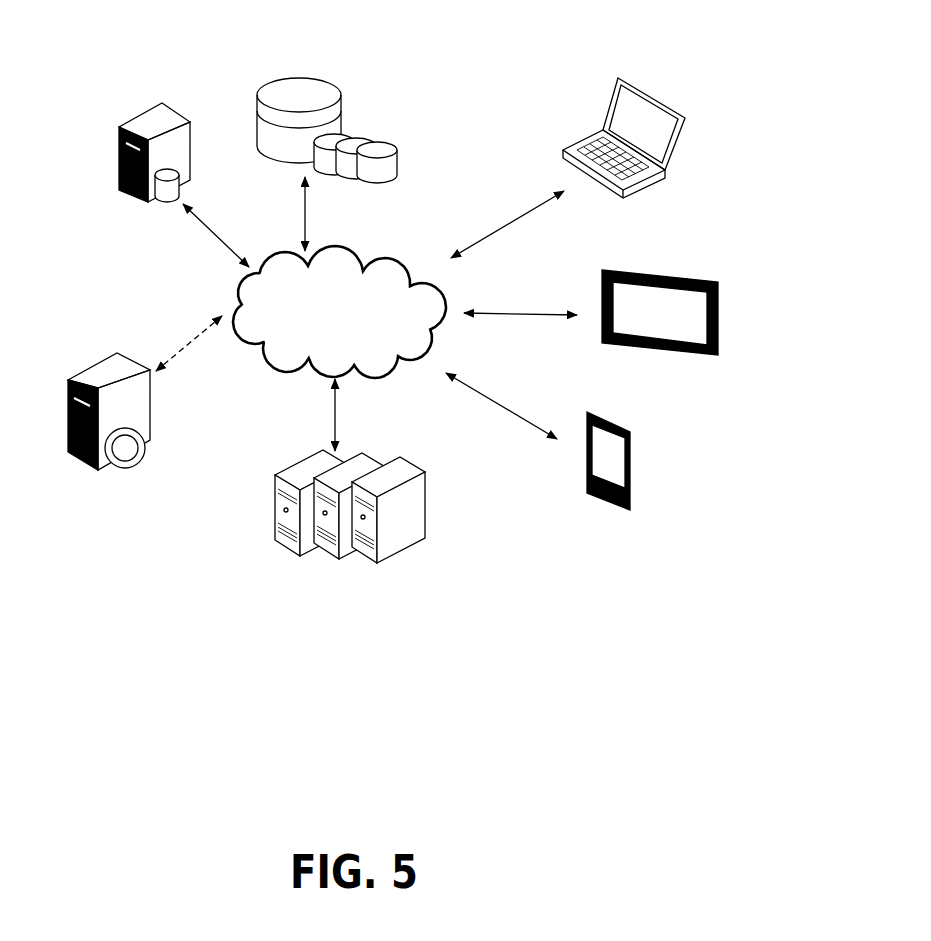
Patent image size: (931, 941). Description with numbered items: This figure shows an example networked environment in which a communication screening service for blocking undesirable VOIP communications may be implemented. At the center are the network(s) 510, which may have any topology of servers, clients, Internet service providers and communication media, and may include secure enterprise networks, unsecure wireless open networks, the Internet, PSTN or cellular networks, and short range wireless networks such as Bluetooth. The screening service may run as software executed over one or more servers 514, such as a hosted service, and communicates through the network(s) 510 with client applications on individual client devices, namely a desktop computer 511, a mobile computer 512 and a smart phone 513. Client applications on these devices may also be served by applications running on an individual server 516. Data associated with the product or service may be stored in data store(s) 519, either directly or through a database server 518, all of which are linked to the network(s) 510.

The network(s) 510 is at (344, 237).
The desktop computer 511 is at (660, 76).
The mobile computer 512 is at (694, 251).
The smart phone 513 is at (637, 425).
The servers 514 is at (300, 451).
The individual server 516 is at (86, 361).
The database server 518 is at (154, 216).
The data store(s) 519 is at (318, 56).